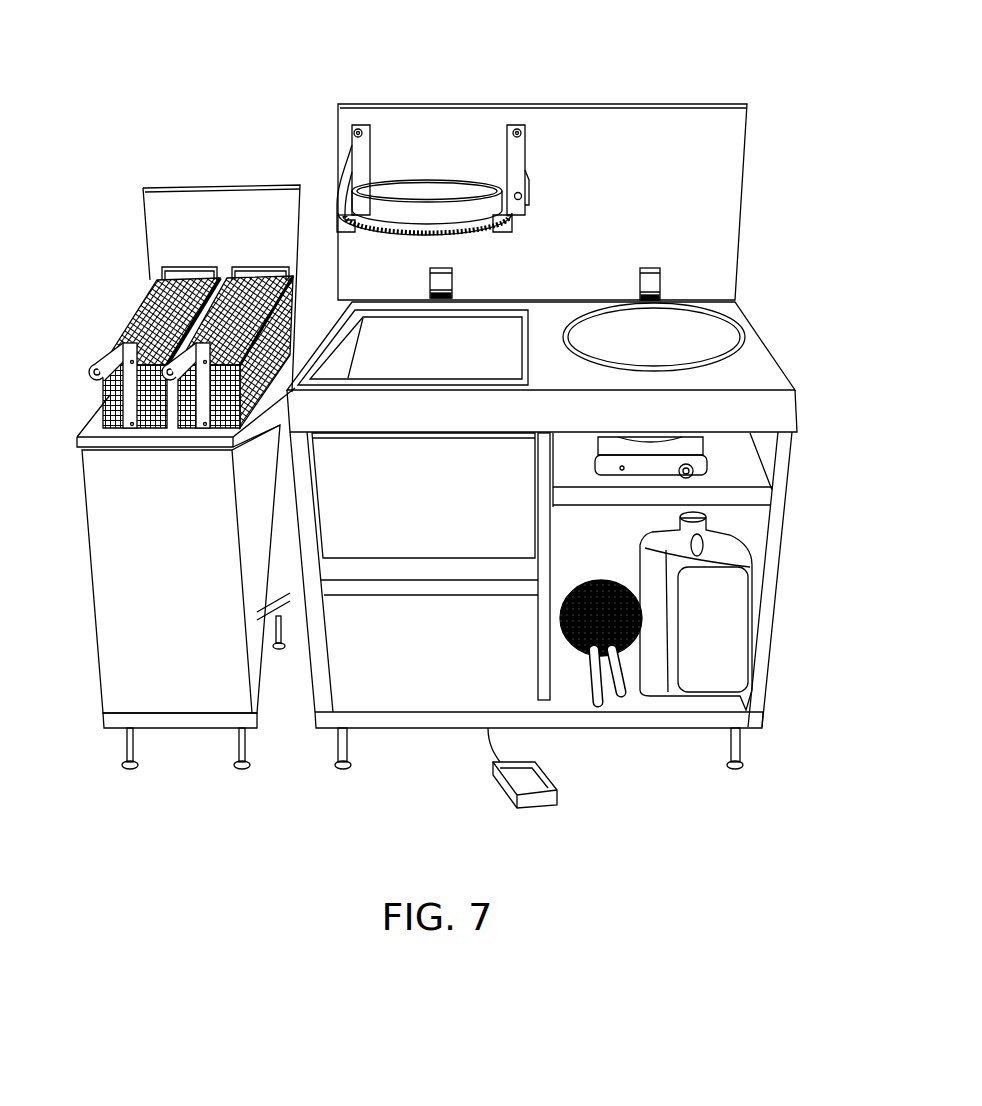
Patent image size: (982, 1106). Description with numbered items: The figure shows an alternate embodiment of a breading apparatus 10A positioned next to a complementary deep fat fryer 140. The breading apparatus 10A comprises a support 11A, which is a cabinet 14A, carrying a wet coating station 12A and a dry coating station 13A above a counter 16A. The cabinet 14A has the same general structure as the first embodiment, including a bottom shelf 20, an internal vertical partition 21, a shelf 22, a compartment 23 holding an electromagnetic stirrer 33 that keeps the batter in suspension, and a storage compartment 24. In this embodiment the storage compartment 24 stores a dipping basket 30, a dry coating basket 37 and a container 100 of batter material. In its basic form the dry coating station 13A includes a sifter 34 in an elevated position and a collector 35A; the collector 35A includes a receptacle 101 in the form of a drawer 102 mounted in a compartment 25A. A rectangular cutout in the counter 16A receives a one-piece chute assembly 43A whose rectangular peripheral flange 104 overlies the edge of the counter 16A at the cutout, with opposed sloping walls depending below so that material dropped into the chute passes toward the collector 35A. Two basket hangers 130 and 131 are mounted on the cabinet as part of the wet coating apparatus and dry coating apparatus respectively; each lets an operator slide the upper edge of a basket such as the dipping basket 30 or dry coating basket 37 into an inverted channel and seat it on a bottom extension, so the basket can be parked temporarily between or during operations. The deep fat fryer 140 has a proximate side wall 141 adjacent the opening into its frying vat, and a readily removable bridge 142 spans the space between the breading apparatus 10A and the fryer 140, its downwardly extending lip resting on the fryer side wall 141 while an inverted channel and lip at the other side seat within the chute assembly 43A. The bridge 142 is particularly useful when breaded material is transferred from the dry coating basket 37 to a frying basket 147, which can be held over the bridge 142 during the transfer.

The breading apparatus 10A is at (706, 90).
The support 11A is at (803, 390).
The wet coating station 12A is at (673, 180).
The dry coating station 13A is at (497, 92).
The cabinet 14A is at (321, 326).
The counter 16A is at (750, 362).
The bottom shelf 20 is at (665, 717).
The vertical partition 21 is at (548, 688).
The shelf 22 is at (740, 482).
The compartment 23 is at (770, 445).
The storage compartment 24 is at (753, 532).
The compartment 25A is at (367, 567).
The dipping basket 30 is at (621, 697).
The electromagnetic stirrer 33 is at (685, 453).
The sifter 34 is at (358, 128).
The collector 35A is at (507, 335).
The dry coating basket 37 is at (607, 706).
The chute assembly 43A is at (405, 363).
The container 100 is at (713, 607).
The receptacle 101 is at (386, 522).
The drawer 102 is at (473, 560).
The rectangular peripheral flange 104 is at (554, 328).
The basket hanger 130 is at (652, 290).
The basket hanger 131 is at (438, 280).
The deep fat fryer 140 is at (165, 492).
The side wall 141 is at (230, 490).
The bridge 142 is at (195, 300).
The frying basket 147 is at (207, 402).